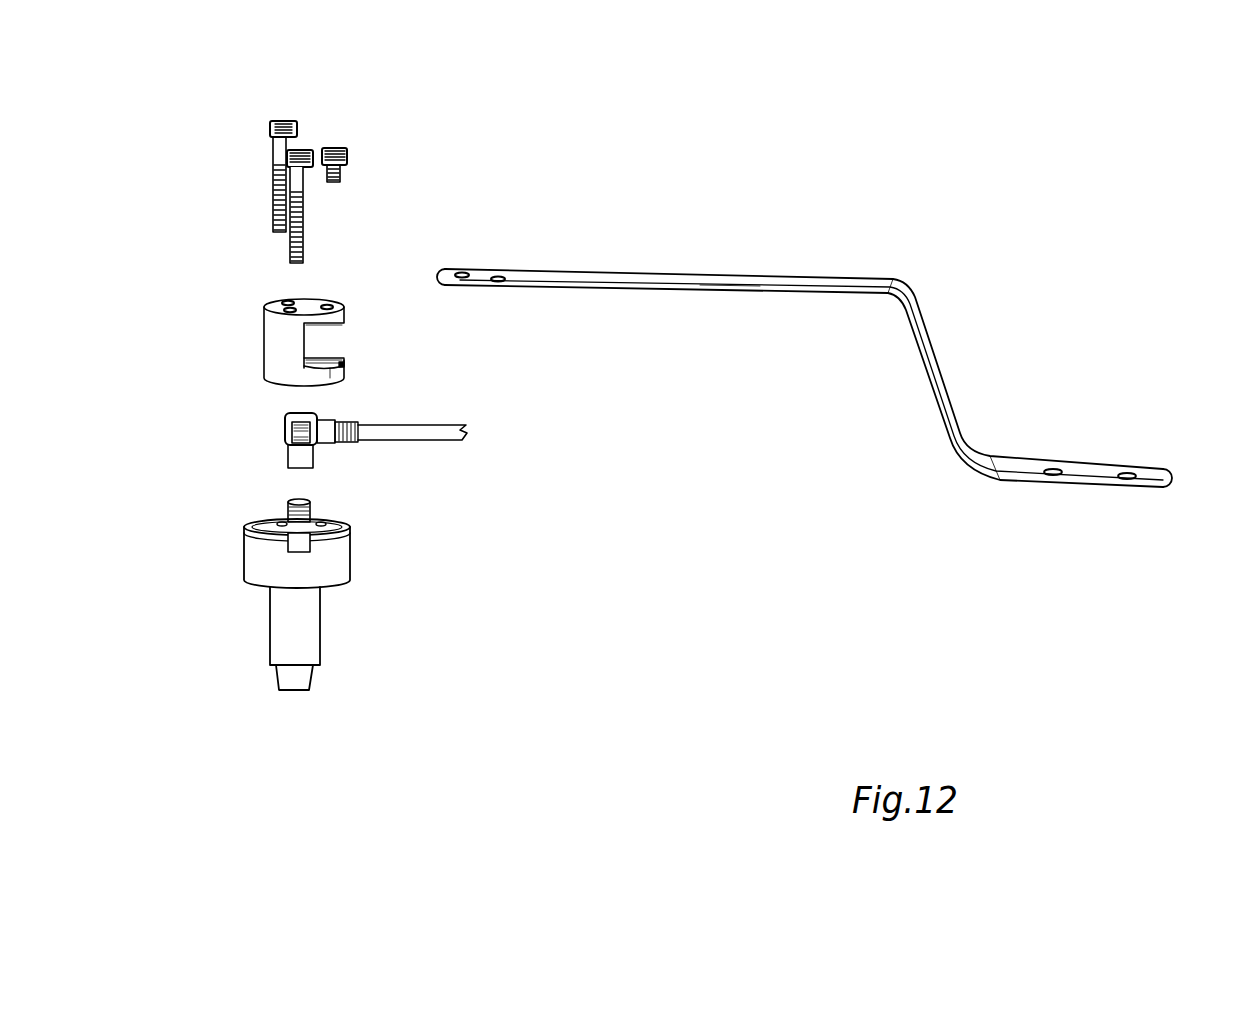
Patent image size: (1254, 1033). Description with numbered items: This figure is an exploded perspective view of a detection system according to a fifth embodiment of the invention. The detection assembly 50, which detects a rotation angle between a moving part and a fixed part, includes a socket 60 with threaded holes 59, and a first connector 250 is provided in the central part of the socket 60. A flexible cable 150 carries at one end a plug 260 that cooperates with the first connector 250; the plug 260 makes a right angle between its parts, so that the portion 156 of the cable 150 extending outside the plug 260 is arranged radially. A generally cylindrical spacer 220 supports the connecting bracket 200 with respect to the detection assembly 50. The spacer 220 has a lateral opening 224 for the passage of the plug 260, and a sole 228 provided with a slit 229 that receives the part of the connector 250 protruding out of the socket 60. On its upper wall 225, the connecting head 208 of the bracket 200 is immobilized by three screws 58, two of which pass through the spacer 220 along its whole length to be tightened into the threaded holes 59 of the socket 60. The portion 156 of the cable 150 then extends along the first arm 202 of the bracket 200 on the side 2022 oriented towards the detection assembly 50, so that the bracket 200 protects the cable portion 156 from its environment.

The screws 58 is at (362, 142).
The spacer 220 is at (287, 347).
The upper wall 225 is at (330, 292).
The lateral opening 224 is at (340, 337).
The slit 229 is at (340, 365).
The sole 228 is at (333, 380).
The flexible cable 150 is at (462, 421).
The plug 260 is at (294, 455).
The cable portion 156 is at (443, 442).
The detection assembly 50 is at (252, 630).
The socket 60 is at (266, 517).
The first connector 250 is at (300, 496).
The threaded holes 59 is at (282, 518).
The connecting bracket 200 is at (1010, 343).
The first arm 202 is at (707, 283).
The side of first arm 2022 is at (757, 297).
The connecting head 208 is at (485, 275).